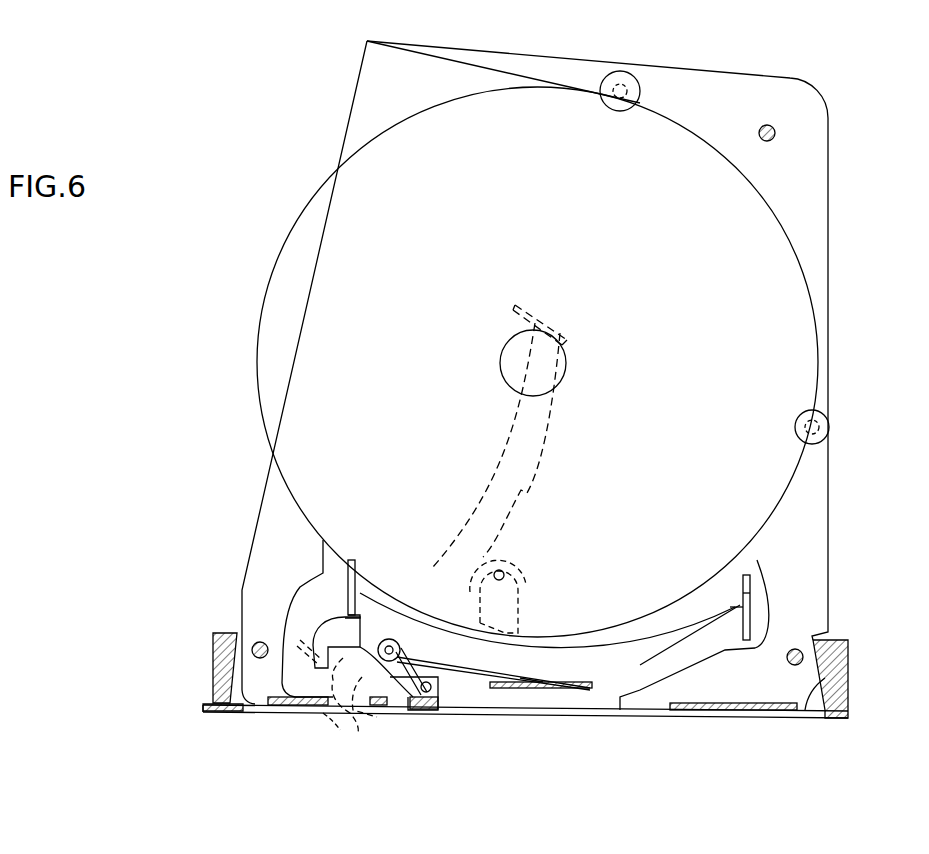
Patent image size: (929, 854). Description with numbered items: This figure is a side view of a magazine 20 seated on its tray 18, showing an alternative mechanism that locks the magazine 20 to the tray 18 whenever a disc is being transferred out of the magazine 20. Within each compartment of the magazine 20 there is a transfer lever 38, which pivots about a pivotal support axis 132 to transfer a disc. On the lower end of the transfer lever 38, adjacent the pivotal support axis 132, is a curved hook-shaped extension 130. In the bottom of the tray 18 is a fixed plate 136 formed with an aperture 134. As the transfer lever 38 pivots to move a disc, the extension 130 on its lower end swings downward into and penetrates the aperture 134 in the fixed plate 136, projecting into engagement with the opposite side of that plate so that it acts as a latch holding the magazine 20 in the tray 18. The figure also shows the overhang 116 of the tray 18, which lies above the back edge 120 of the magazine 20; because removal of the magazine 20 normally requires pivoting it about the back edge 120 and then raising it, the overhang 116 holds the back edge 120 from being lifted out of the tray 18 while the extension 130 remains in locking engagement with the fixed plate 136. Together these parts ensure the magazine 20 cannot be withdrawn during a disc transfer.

The magazine 20 is at (828, 523).
The transfer lever 38 is at (648, 632).
The curved hook-shaped extension 130 is at (336, 610).
The pivotal support axis 132 is at (402, 648).
The overhang 116 is at (848, 640).
The tray 18 is at (848, 675).
The back edge 120 is at (812, 700).
The fixed plate 136 is at (243, 712).
The aperture 134 is at (322, 715).